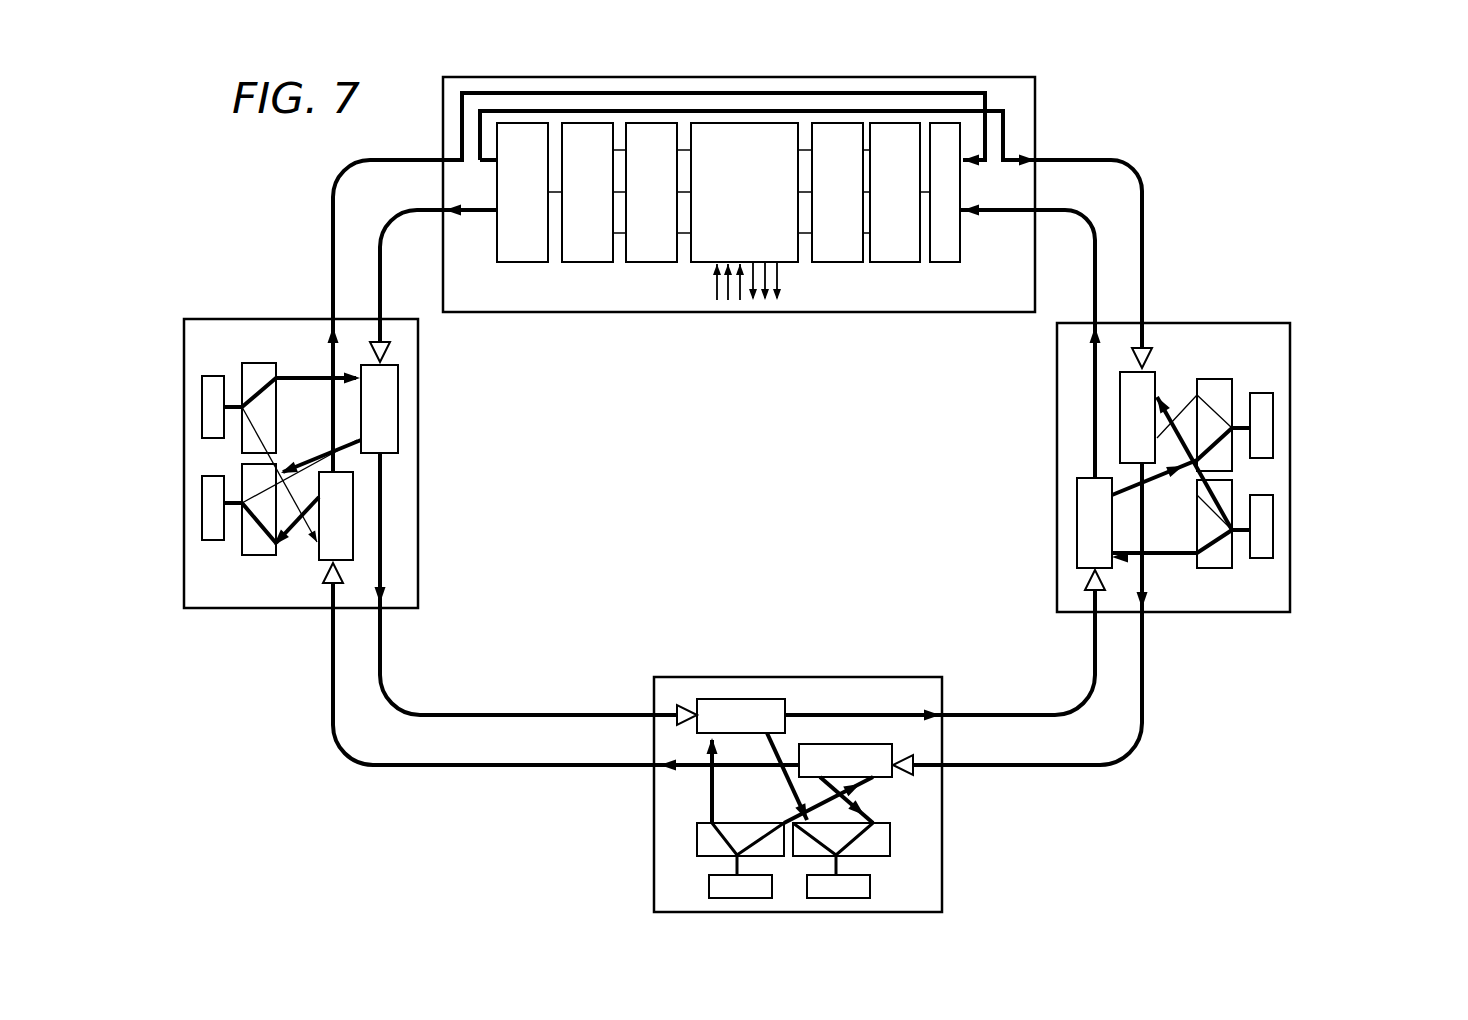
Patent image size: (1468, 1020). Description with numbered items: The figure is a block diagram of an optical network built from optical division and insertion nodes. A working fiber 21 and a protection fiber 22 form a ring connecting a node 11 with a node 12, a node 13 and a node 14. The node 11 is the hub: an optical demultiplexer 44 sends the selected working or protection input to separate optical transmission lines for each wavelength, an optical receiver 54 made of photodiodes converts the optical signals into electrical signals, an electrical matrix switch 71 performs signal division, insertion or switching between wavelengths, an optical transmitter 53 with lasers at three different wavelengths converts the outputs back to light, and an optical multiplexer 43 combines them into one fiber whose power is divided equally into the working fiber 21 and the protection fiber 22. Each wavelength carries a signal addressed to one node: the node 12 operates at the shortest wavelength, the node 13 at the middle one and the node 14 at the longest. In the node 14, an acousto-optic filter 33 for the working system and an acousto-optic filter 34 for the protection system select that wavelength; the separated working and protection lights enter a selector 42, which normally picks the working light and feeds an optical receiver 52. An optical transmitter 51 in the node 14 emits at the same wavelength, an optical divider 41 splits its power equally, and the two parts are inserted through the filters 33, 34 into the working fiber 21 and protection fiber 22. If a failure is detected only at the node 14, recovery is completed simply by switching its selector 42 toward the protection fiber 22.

The node 11 is at (778, 194).
The node 12 is at (840, 798).
The node 13 is at (291, 445).
The node 14 is at (1215, 467).
The working fiber 21 is at (737, 469).
The protection fiber 22 is at (737, 465).
The acousto-optic filter 33 is at (1130, 416).
The acousto-optic filter 34 is at (1077, 528).
The optical divider 41 is at (1232, 627).
The selector 42 is at (1218, 385).
The optical multiplexer 43 is at (588, 192).
The optical demultiplexer 44 is at (896, 192).
The optical transmitter 51 is at (1265, 530).
The optical receiver 52 is at (1265, 408).
The optical transmitter 53 is at (652, 192).
The optical receiver 54 is at (838, 192).
The electrical matrix switch 71 is at (744, 211).